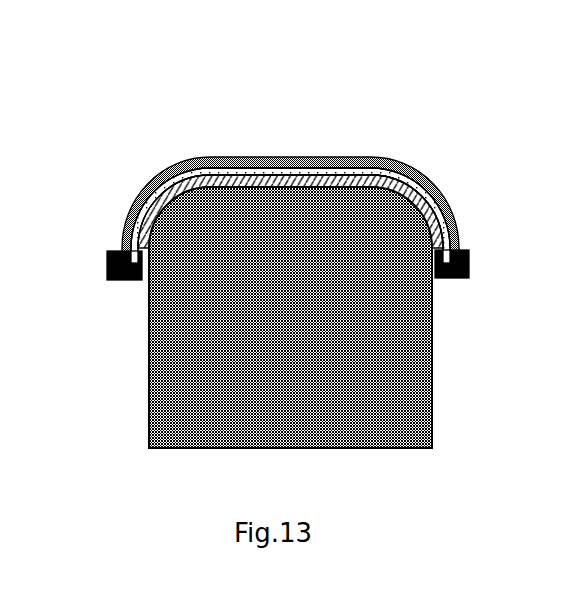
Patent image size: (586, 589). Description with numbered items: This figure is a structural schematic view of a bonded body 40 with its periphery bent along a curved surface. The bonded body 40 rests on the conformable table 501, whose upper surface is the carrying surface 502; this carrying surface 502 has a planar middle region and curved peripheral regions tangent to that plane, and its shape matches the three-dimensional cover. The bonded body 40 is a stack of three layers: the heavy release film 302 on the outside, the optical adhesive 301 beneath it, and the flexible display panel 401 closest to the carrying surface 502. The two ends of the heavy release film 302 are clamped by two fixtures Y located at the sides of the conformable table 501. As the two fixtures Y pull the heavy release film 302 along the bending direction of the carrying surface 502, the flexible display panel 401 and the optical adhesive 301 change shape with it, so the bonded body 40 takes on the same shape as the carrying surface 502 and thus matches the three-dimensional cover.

The bonded body 40 is at (342, 65).
The heavy release film 302 is at (202, 158).
The optical adhesive 301 is at (267, 169).
The flexible display panel 401 is at (338, 176).
The conformable table 501 is at (217, 305).
The carrying surface 502 is at (393, 182).
The fixture Y is at (107, 266).